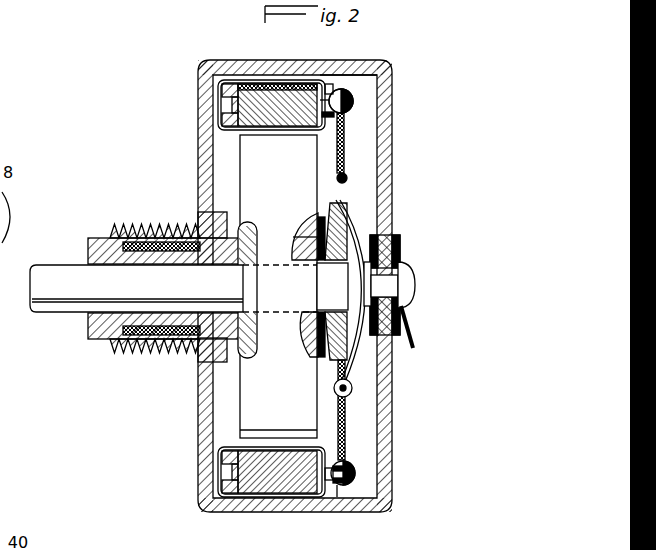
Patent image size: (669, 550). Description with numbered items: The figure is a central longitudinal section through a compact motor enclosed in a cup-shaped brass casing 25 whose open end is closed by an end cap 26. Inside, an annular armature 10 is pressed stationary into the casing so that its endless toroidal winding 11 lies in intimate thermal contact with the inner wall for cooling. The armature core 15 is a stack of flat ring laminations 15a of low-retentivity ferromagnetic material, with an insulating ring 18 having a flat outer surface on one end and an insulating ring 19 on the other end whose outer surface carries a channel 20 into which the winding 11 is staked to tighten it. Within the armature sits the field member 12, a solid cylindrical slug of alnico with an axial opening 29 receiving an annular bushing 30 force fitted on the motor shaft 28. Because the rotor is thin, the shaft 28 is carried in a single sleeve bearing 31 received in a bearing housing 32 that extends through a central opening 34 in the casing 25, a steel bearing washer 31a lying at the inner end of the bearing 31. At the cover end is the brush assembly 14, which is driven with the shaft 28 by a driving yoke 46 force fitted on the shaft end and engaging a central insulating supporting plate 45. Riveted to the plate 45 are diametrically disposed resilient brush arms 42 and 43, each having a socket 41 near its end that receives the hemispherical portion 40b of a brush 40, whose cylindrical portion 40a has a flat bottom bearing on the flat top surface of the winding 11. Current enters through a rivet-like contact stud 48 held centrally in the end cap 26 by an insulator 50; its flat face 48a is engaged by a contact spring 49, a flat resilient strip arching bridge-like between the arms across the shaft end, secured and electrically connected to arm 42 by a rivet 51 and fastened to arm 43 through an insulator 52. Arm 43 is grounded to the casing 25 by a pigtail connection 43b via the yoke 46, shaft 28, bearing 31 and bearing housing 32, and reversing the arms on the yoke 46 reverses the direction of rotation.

The armature 10 is at (251, 71).
The toroidal winding 11 is at (272, 80).
The field member 12 is at (239, 156).
The brush assembly 14 is at (361, 112).
The core 15 is at (281, 118).
The ring laminations 15a is at (287, 80).
The insulating ring 18 is at (339, 78).
The insulating ring 19 is at (218, 80).
The channel 20 is at (222, 104).
The casing 25 is at (208, 423).
The end cap 26 is at (395, 418).
The motor shaft 28 is at (45, 313).
The axially disposed opening 29 is at (298, 241).
The bushing 30 is at (293, 250).
The sleeve bearing 31 is at (102, 339).
The bearing washer 31a is at (246, 340).
The bearing housing 32 is at (116, 233).
The opening 34 is at (196, 227).
The brushes 40 is at (344, 104).
The cylindrical portion 40a is at (337, 497).
The hemispherical portion 40b is at (356, 489).
The socket 41 is at (348, 466).
The brush arm 42 is at (345, 432).
The brush arm 43 is at (344, 134).
The pigtail connection 43b is at (347, 213).
The supporting plate 45 is at (330, 361).
The driving yoke 46 is at (303, 333).
The contact stud 48 is at (416, 290).
The flat face 48a is at (364, 287).
The contact spring 49 is at (350, 387).
The insulator 50 is at (405, 308).
The rivet 51 is at (348, 397).
The insulator 52 is at (346, 181).